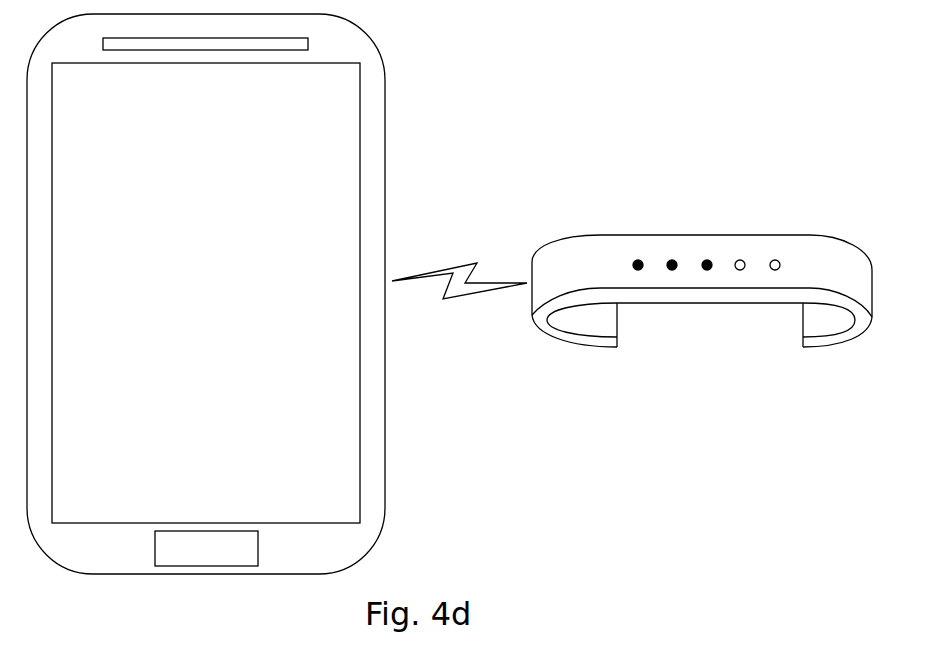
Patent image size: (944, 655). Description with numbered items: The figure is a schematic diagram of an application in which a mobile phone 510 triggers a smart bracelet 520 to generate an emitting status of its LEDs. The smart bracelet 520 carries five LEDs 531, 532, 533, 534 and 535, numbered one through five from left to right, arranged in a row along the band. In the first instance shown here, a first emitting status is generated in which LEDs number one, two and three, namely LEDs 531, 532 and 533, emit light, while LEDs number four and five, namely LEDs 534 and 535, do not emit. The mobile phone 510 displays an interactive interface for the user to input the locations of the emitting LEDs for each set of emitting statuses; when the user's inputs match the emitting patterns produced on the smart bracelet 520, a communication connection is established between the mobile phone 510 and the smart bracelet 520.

The mobile phone 510 is at (385, 128).
The smart bracelet 520 is at (805, 235).
The LED 531 is at (638, 272).
The LED 532 is at (672, 259).
The LED 533 is at (707, 272).
The LED 534 is at (740, 259).
The LED 535 is at (775, 272).